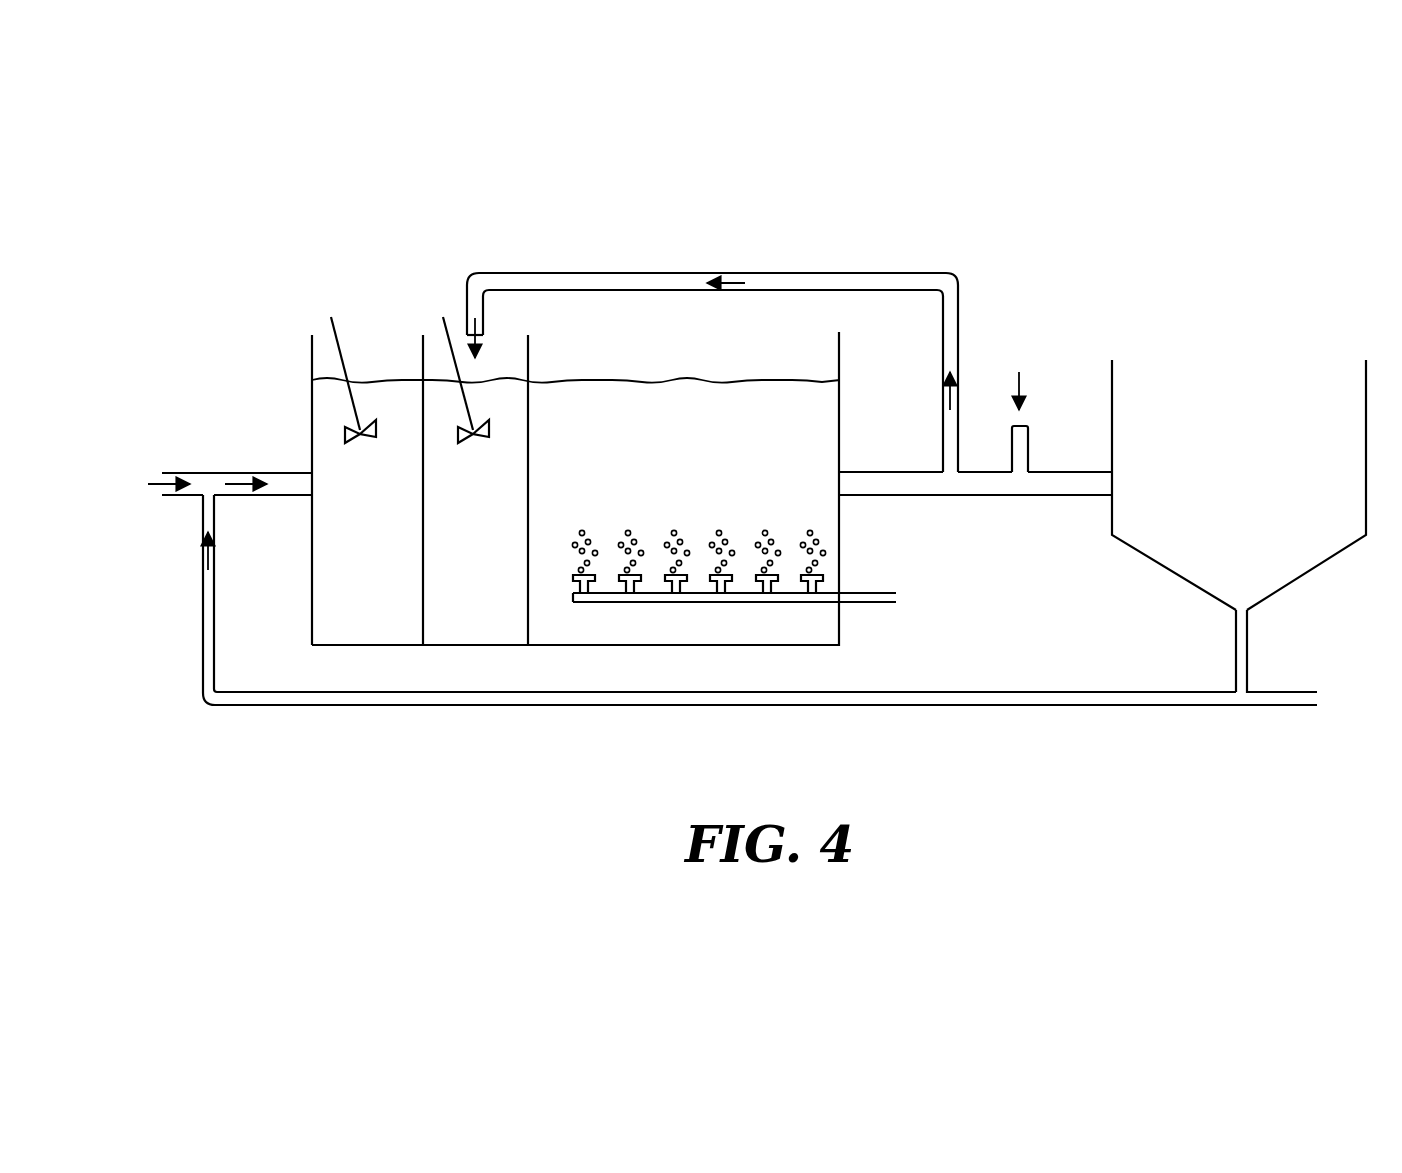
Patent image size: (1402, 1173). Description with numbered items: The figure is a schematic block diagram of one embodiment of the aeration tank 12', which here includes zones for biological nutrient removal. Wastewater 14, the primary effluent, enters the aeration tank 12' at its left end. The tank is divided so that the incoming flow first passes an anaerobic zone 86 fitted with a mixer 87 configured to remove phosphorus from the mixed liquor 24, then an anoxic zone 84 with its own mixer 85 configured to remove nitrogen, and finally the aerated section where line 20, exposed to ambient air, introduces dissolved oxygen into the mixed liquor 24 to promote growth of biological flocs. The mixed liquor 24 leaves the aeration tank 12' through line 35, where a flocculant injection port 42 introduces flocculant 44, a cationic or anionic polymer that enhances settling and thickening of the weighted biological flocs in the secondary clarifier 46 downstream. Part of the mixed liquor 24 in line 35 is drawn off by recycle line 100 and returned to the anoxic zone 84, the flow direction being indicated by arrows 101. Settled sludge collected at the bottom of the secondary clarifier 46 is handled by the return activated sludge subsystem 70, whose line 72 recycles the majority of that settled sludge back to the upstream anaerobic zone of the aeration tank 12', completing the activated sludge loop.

The wastewater 14 is at (184, 466).
The anaerobic zone 86 is at (367, 490).
The anoxic zone 84 is at (494, 490).
The mixer 87 is at (331, 317).
The mixer 85 is at (443, 317).
The recycle line 100 is at (568, 273).
The arrows 101 is at (731, 282).
The mixed liquor 24 is at (712, 380).
The aeration tank 12' is at (627, 488).
The line 20 is at (869, 603).
The line 35 is at (983, 490).
The flocculant injection port 42 is at (1025, 447).
The flocculant 44 is at (1031, 361).
The secondary clarifier 46 is at (1168, 570).
The return activated sludge subsystem 70 is at (1287, 698).
The line 72 is at (1007, 698).